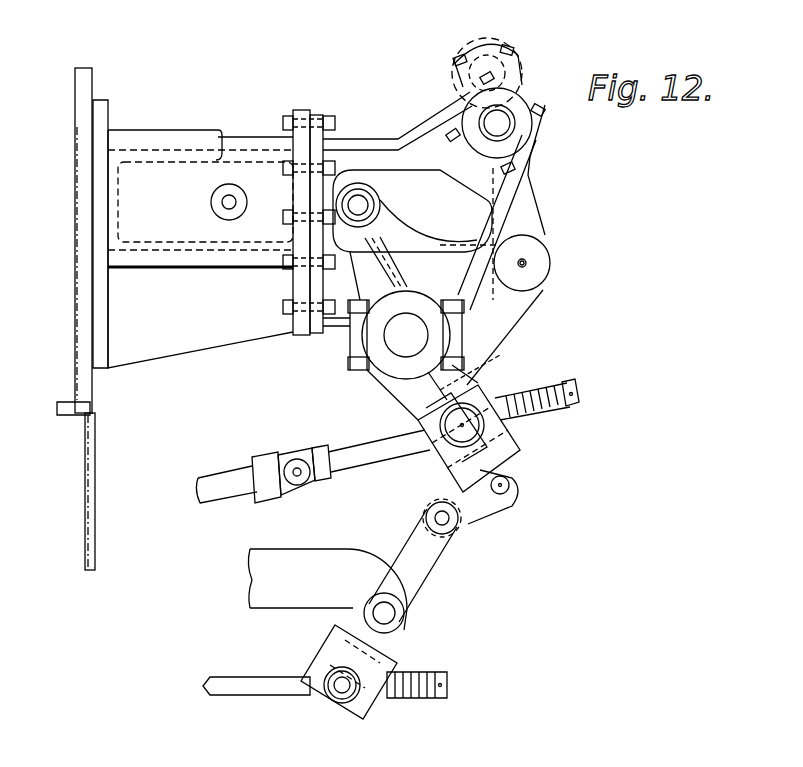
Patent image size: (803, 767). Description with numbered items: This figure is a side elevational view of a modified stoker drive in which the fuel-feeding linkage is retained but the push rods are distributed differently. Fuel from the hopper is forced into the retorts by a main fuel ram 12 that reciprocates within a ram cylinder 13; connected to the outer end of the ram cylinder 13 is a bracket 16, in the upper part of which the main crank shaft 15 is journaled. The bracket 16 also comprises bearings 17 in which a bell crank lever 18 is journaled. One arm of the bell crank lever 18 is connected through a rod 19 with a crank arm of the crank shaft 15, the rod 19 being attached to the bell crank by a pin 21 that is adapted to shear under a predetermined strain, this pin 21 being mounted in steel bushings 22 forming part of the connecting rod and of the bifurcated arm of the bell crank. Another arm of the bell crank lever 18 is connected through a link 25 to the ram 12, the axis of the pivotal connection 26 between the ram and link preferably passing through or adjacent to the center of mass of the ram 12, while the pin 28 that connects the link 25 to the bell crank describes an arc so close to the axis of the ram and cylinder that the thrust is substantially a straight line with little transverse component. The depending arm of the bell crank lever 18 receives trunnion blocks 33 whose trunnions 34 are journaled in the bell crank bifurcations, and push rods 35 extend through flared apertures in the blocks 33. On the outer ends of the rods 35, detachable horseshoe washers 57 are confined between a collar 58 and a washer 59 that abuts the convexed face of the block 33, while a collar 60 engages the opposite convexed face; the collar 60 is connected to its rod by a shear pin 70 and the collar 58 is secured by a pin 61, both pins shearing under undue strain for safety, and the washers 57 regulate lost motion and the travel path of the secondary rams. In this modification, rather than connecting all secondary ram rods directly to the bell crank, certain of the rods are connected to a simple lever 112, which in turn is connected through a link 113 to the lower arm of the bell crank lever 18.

The main fuel ram 12 is at (190, 245).
The ram cylinder 13 is at (184, 140).
The main crank shaft 15 is at (515, 114).
The bracket 16 is at (370, 148).
The bearings 17 is at (392, 345).
The bell crank lever 18 is at (500, 316).
The rod 19 is at (528, 212).
The pin 21 is at (530, 260).
The steel bushings 22 is at (528, 265).
The link 25 is at (262, 195).
The pivotal connection 26 is at (222, 202).
The pin 28 is at (362, 205).
The trunnion block 33 is at (440, 418).
The trunnions 34 is at (440, 448).
The push rods 35 is at (370, 458).
The horseshoe washers 57 is at (545, 396).
The collar 58 is at (552, 385).
The washer 59 is at (505, 428).
The collar 60 is at (432, 432).
The pins 61 is at (578, 396).
The shear pin 70 is at (379, 451).
The lever 112 is at (428, 563).
The link 113 is at (480, 510).